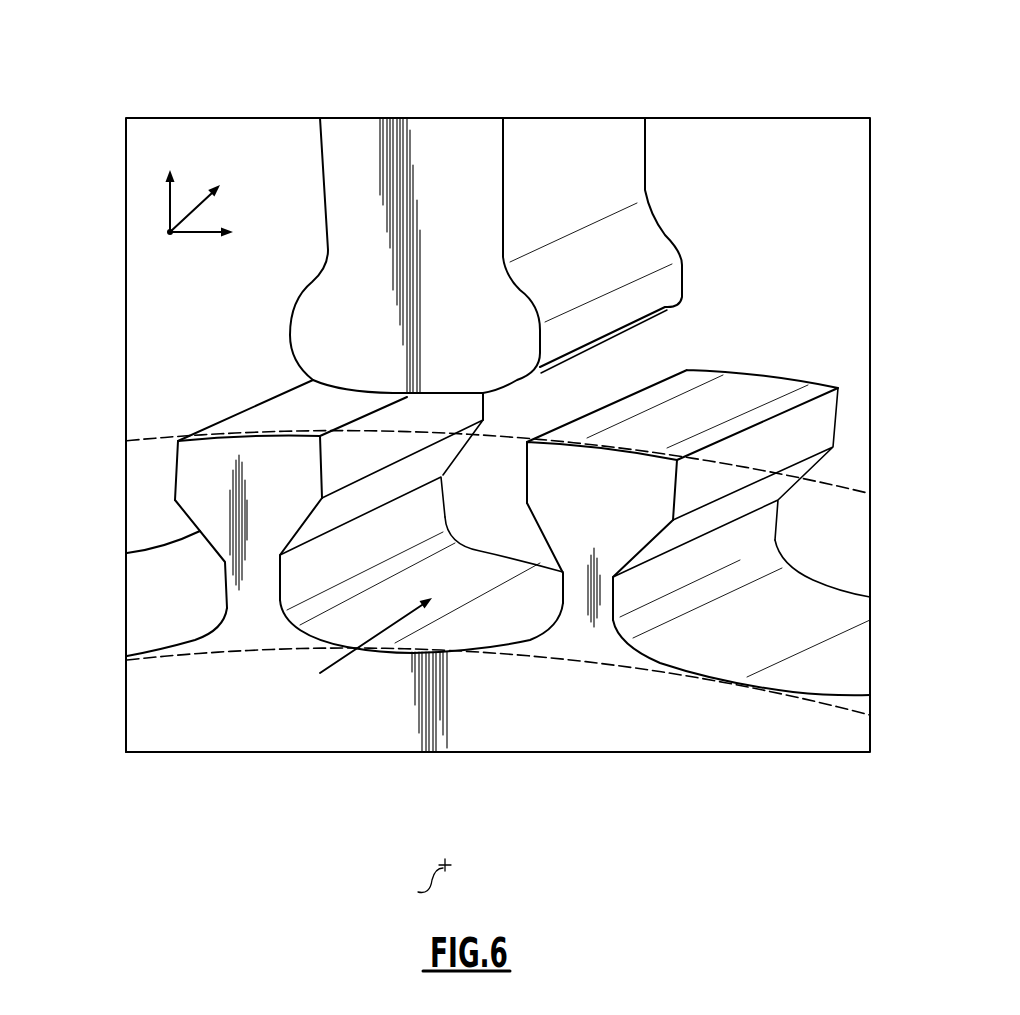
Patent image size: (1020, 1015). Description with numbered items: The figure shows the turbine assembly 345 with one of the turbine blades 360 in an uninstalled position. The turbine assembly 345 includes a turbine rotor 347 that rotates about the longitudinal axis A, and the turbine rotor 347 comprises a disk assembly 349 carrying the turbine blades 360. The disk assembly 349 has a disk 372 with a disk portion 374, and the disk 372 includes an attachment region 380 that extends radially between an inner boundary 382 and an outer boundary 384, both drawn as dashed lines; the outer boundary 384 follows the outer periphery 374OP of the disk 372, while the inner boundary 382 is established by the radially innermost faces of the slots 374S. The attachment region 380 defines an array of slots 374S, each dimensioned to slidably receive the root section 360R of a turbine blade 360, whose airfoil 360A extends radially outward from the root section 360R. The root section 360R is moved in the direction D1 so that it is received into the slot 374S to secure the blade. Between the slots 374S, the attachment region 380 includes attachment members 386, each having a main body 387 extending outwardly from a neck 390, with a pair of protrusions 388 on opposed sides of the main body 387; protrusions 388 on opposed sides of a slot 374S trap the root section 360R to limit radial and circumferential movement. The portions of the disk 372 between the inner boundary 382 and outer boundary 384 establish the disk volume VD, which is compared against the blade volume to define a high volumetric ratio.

The turbine assembly 345 is at (162, 72).
The turbine rotor 347 is at (215, 108).
The disk assembly 349 is at (112, 735).
The turbine blade 360 is at (655, 122).
The airfoil of rotor blade 360A is at (635, 160).
The root section 360R is at (673, 283).
The disk 372 is at (774, 760).
The disk portion 374 is at (847, 740).
The outer periphery 374OP is at (710, 385).
The slot 374S is at (687, 712).
The attachment region 380 is at (148, 484).
The inner boundary 382 is at (837, 710).
The outer boundary 384 is at (842, 483).
The attachment member 386 is at (257, 407).
The main body 387 is at (272, 457).
The protrusion 388 is at (190, 507).
The neck 390 is at (257, 587).
The disk volume VD is at (141, 432).
The direction D1 is at (333, 667).